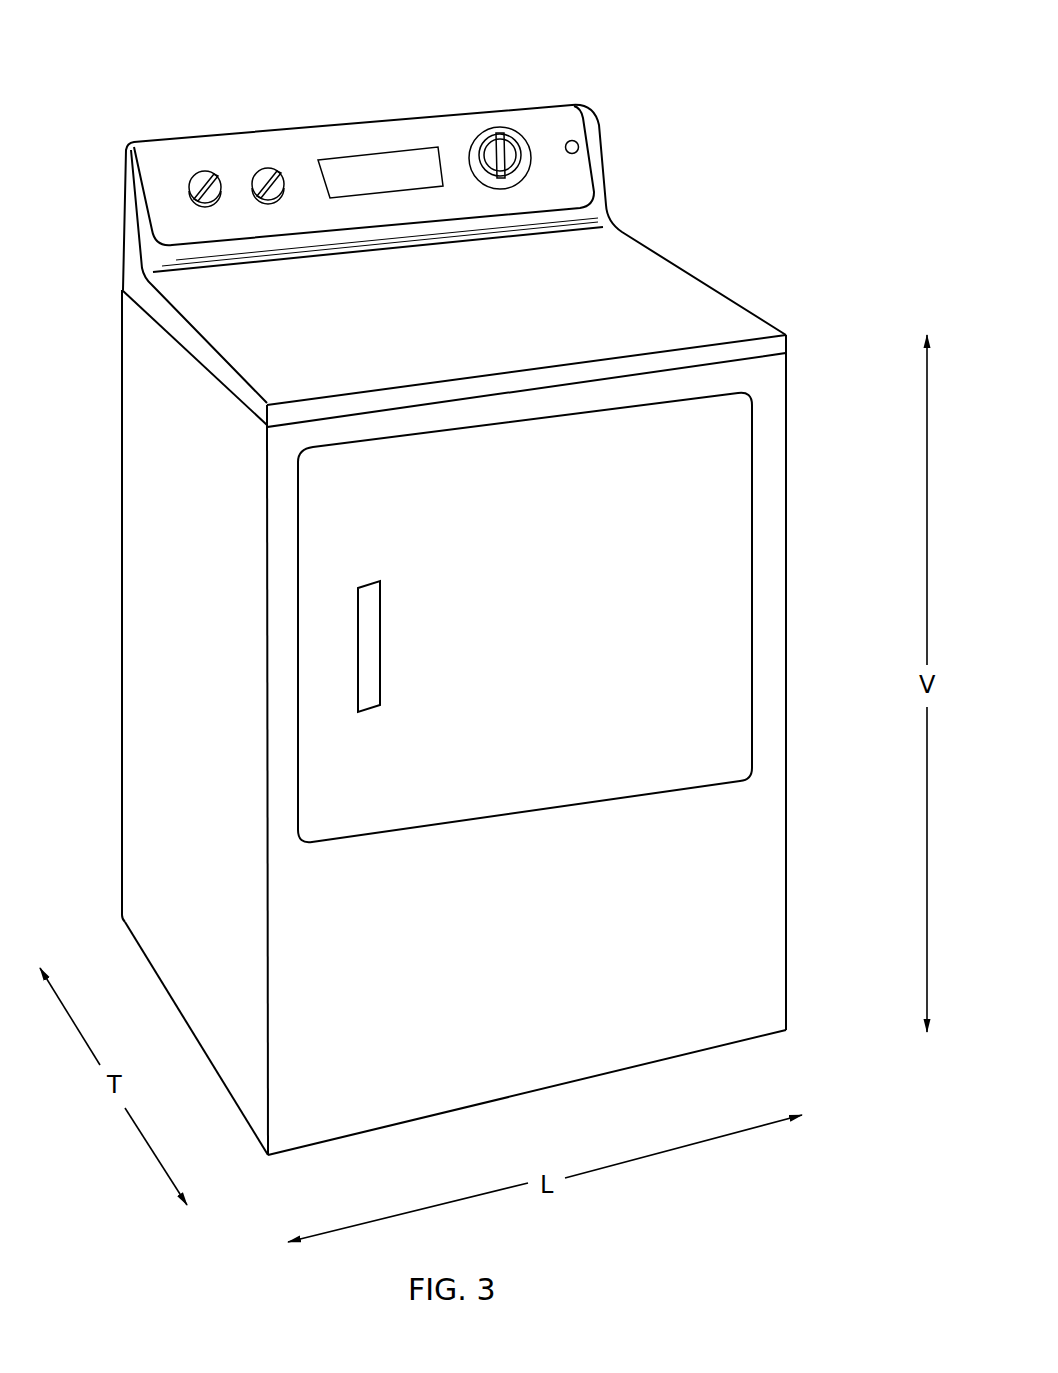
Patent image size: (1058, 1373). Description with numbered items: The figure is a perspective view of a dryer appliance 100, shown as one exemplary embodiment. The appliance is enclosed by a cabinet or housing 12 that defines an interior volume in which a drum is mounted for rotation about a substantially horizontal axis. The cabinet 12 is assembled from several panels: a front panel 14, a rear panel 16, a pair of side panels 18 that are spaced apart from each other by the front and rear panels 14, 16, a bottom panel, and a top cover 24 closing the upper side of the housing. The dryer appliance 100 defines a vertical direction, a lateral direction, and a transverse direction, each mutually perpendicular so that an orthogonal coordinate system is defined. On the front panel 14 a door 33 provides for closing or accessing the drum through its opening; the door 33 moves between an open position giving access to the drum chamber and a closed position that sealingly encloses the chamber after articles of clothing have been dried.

The dryer appliance 100 is at (177, 63).
The cabinet 12 is at (745, 935).
The front panel 14 is at (697, 1002).
The rear panel 16 is at (117, 383).
The side panel 18 is at (165, 610).
The top cover 24 is at (638, 307).
The door 33 is at (707, 598).